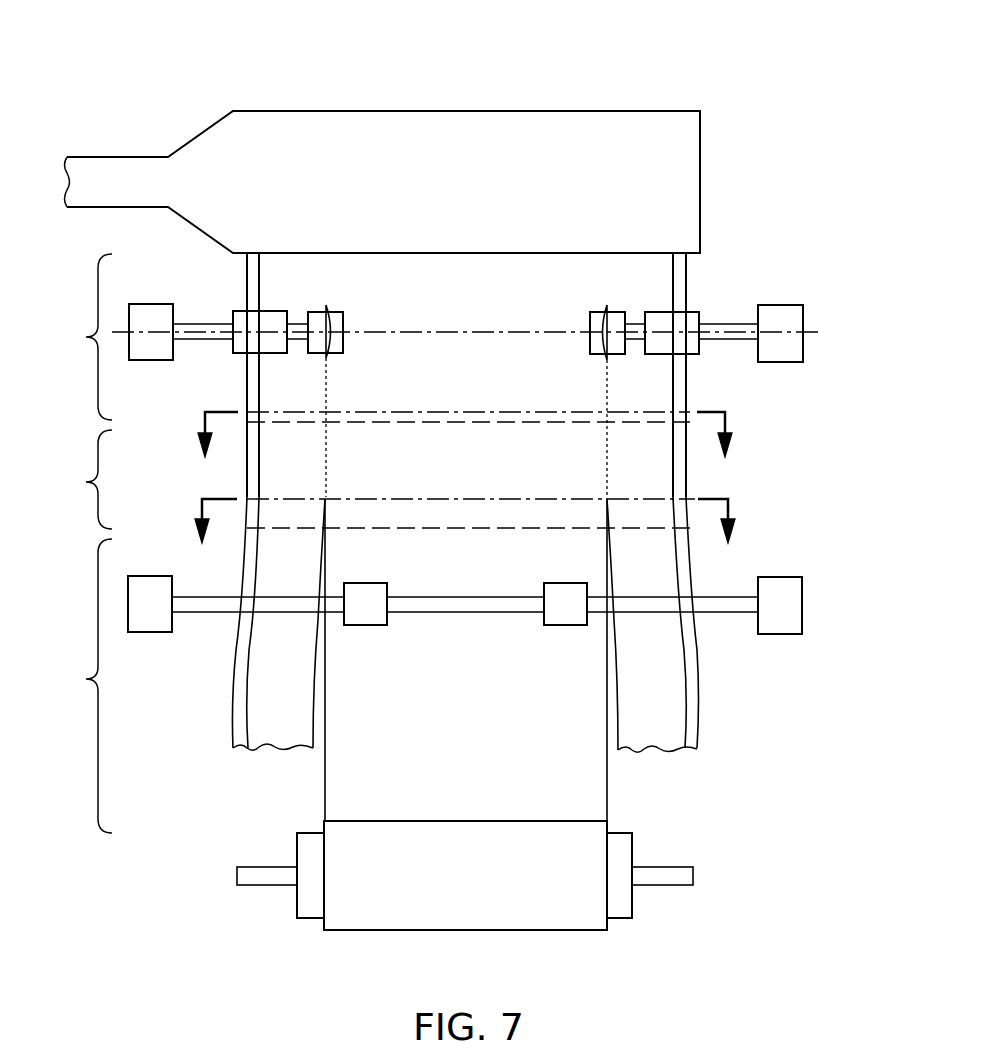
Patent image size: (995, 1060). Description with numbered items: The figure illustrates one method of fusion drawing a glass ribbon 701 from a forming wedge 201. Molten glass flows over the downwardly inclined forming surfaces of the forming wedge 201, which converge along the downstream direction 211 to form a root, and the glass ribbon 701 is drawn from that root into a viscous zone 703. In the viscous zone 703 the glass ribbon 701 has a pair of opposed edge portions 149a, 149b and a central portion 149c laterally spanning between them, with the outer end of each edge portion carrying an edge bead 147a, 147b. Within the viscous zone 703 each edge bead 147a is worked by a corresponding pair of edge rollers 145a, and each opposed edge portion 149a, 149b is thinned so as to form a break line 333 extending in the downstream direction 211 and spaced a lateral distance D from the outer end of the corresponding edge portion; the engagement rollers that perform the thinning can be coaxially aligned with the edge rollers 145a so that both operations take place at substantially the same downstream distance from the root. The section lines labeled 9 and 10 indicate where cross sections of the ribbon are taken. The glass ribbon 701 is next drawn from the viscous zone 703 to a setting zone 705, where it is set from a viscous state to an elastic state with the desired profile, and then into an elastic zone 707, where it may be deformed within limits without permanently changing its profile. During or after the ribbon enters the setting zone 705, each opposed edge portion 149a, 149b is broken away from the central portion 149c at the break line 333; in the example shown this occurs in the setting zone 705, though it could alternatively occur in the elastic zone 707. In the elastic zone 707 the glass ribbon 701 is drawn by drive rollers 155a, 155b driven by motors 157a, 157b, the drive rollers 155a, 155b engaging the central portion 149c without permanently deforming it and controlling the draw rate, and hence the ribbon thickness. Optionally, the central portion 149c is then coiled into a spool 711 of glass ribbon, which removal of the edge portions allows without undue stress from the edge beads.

The forming wedge 201 is at (275, 100).
The glass ribbon 701 is at (503, 288).
The opposed edge portion 149a is at (292, 290).
The opposed edge portion 149b is at (641, 290).
The central portion 149c is at (452, 290).
The edge bead 147a is at (246, 292).
The edge bead 147b is at (687, 292).
The pair of edge rollers 145a is at (294, 302).
The break line 333 is at (327, 387).
The viscous zone 703 is at (425, 337).
The setting zone 705 is at (361, 475).
The elastic zone 707 is at (325, 666).
The downstream direction 211 is at (466, 486).
The lateral distance D is at (326, 455).
The section line 9- 9 is at (463, 441).
The section line 10- 10 is at (466, 527).
The drive roller 155a is at (365, 627).
The drive roller 155b is at (562, 627).
The motor 157a is at (150, 633).
The motor 157b is at (803, 603).
The spool 711 is at (513, 932).